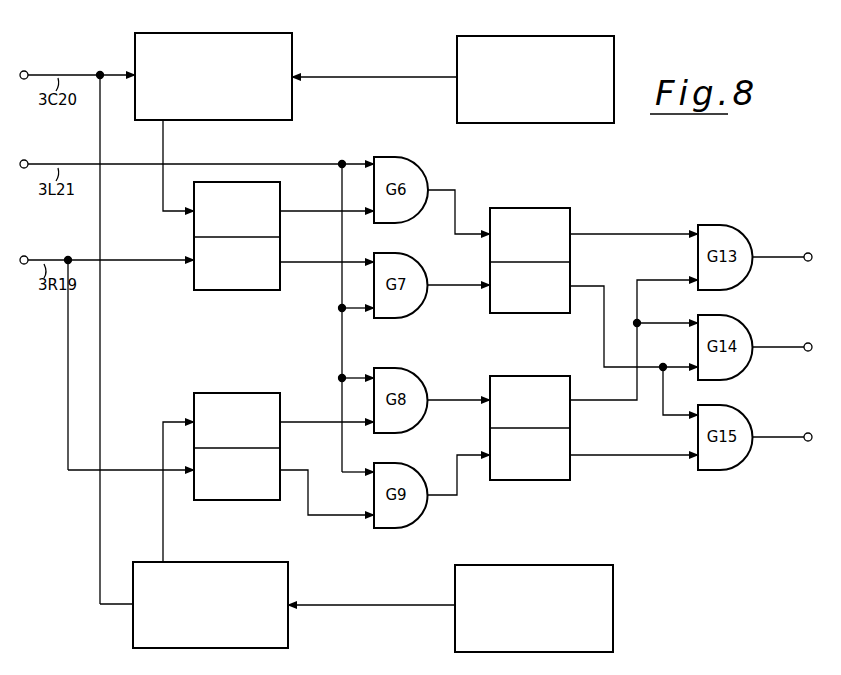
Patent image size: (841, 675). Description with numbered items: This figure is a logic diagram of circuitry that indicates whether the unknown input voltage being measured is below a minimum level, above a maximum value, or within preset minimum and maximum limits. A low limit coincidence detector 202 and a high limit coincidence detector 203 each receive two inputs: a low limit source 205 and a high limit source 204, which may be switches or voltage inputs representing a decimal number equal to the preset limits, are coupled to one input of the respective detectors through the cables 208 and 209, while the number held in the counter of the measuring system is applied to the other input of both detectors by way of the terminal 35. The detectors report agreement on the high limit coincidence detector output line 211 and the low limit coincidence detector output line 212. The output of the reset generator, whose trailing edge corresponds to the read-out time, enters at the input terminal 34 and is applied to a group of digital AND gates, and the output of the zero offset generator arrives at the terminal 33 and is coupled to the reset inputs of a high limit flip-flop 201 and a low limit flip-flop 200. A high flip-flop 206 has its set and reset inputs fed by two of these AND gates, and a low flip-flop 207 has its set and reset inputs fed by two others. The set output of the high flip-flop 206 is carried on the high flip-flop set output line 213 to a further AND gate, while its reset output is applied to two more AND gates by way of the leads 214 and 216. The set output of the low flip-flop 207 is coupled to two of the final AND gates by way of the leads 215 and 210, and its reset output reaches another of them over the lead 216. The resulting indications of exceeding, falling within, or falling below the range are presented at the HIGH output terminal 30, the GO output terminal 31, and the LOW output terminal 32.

The HIGH output terminal 30 is at (810, 261).
The GO output terminal 31 is at (810, 351).
The LOW output terminal 32 is at (811, 441).
The terminal 33 is at (32, 249).
The input terminal 3L21 34 is at (32, 153).
The terminal 35 is at (32, 63).
The low limit flip-flop 200 is at (247, 394).
The high limit flip-flop 201 is at (281, 198).
The low limit coincidence detector 202 is at (296, 554).
The high limit coincidence detector 203 is at (287, 26).
The high limit source 204 is at (592, 36).
The low limit source 205 is at (612, 566).
The high flip-flop 206 is at (565, 200).
The low flip-flop 207 is at (578, 366).
The cable 208 is at (387, 596).
The cable 209 is at (382, 66).
The lead 210 is at (666, 314).
The high limit coincidence detector output line 211 is at (164, 158).
The low limit coincidence detector output line 212 is at (164, 541).
The high flip-flop set output line 213 is at (653, 234).
The lead 214 is at (603, 344).
The lead 215 is at (606, 396).
The lead 216 is at (646, 455).